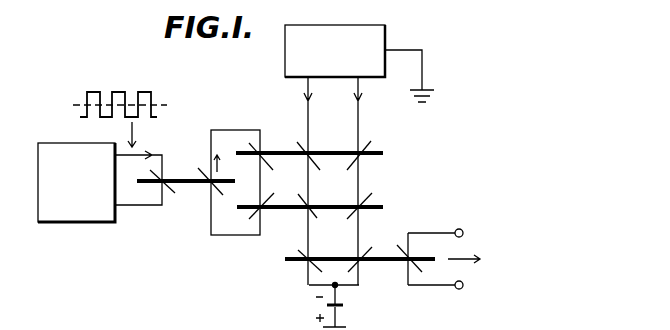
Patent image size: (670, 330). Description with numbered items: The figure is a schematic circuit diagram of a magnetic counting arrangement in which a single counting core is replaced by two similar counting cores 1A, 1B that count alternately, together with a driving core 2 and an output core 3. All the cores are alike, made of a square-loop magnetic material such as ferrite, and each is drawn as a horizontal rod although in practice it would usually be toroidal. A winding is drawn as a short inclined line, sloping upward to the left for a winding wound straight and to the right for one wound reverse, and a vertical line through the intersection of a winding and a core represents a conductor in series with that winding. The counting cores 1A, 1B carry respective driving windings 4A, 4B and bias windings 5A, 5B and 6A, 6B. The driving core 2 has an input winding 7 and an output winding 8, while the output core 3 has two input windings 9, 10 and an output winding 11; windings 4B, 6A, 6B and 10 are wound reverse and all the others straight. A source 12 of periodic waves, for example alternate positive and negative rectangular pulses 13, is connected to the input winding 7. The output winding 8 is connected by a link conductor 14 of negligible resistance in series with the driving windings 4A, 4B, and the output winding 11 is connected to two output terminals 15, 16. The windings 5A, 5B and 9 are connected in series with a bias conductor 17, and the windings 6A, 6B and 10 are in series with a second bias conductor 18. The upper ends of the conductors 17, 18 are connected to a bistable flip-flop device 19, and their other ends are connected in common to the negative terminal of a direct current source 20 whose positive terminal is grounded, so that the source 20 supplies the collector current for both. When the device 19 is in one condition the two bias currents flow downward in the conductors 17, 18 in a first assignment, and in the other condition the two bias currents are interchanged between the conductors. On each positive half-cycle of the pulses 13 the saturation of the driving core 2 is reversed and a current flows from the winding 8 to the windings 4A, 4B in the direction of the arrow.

The driving core 2 is at (190, 177).
The output core 3 is at (395, 263).
The input winding 7 is at (173, 196).
The output winding 8 is at (220, 192).
The input winding 9 is at (308, 272).
The input winding 10 is at (372, 253).
The output winding 11 is at (418, 276).
The source of periodic waves or pulses 12 is at (115, 208).
The rectangular pulses 13 is at (138, 92).
The link conductor 14 is at (211, 132).
The output terminal 15 is at (463, 233).
The output terminal 16 is at (463, 285).
The bias conductor 17 is at (307, 177).
The second bias conductor 18 is at (356, 177).
The bistable flip-flop device 19 is at (385, 28).
The direct current source 20 is at (343, 307).
The counting core 1A is at (286, 151).
The counting core 1B is at (285, 209).
The driving winding 4A is at (258, 148).
The driving winding 4B is at (256, 218).
The bias winding 5A is at (303, 147).
The bias winding 5B is at (312, 213).
The bias winding 6A is at (366, 146).
The bias winding 6B is at (362, 200).